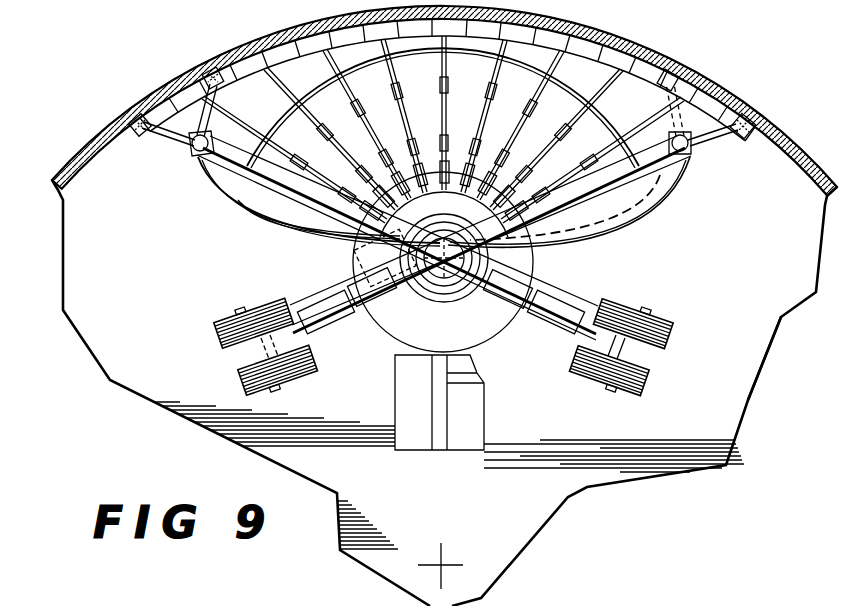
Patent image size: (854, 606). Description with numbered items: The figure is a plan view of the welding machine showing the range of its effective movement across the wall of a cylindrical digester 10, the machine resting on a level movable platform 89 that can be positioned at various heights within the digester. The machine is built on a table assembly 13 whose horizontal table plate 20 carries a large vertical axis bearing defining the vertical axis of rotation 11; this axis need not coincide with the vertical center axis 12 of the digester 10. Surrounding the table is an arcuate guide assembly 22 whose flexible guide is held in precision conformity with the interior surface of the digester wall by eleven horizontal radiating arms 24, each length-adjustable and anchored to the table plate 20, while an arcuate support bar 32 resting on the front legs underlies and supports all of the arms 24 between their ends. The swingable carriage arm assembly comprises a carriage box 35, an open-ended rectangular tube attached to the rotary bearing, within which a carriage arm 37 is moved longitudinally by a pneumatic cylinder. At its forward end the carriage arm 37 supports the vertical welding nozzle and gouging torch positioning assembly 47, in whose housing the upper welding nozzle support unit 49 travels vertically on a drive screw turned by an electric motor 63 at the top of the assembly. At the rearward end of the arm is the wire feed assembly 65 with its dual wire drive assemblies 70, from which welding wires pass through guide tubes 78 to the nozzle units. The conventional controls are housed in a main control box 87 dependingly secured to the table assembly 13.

The digester 10 is at (101, 118).
The vertical axis of rotation 11 is at (459, 225).
The vertical center axis 12 is at (441, 566).
The table assembly 13 is at (486, 340).
The horizontal table plate 20 is at (396, 331).
The arcuate guide assembly 22 is at (750, 142).
The horizontal radiating arms 24 is at (661, 188).
The arcuate support bar 32 is at (391, 57).
The carriage box 35 is at (522, 260).
The carriage arm 37 is at (226, 199).
The welding nozzle and gouging torch positioning assembly 47 is at (189, 171).
The upper welding nozzle support unit 49 is at (187, 78).
The electric motor 63 is at (190, 147).
The wire feed assembly 65 is at (236, 306).
The wire drive assembly 70 is at (577, 281).
The guide tubes 78 is at (244, 222).
The main control box 87 is at (395, 400).
The movable platform 89 is at (742, 380).